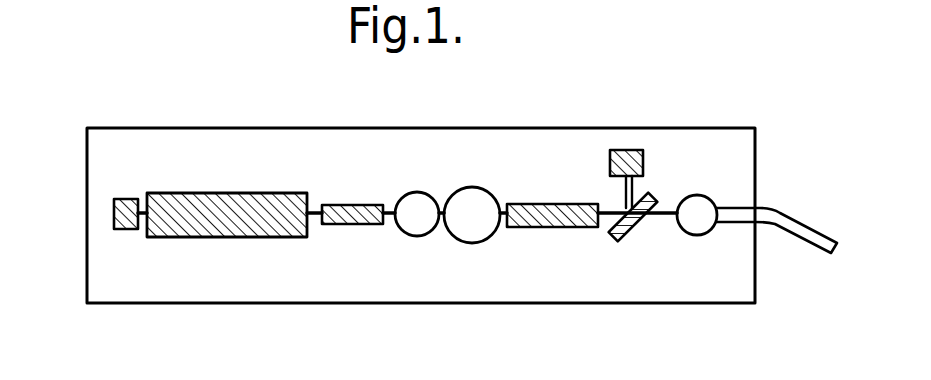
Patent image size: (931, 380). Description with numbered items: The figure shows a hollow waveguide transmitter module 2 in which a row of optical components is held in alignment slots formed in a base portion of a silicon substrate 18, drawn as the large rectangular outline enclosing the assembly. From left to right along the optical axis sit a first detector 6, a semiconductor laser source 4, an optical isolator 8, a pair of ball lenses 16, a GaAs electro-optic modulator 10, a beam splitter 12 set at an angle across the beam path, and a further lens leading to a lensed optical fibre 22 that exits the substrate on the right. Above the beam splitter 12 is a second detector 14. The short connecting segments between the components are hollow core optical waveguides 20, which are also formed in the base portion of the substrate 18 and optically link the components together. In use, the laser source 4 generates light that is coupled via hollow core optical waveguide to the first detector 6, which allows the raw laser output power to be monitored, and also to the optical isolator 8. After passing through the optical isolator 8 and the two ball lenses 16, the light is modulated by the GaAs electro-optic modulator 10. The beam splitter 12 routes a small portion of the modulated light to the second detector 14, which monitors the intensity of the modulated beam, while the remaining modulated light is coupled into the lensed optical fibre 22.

The transmitter module 2 is at (485, 96).
The semiconductor laser source 4 is at (247, 208).
The first detector 6 is at (114, 211).
The optical isolator 8 is at (347, 206).
The GaAs electro-optic modulator 10 is at (568, 208).
The beam splitter 12 is at (628, 239).
The second detector 14 is at (623, 150).
The ball lenses 16 is at (422, 227).
The silicon substrate 18 is at (98, 285).
The hollow core optical waveguides 20 is at (314, 222).
The lensed optical fibre 22 is at (746, 207).